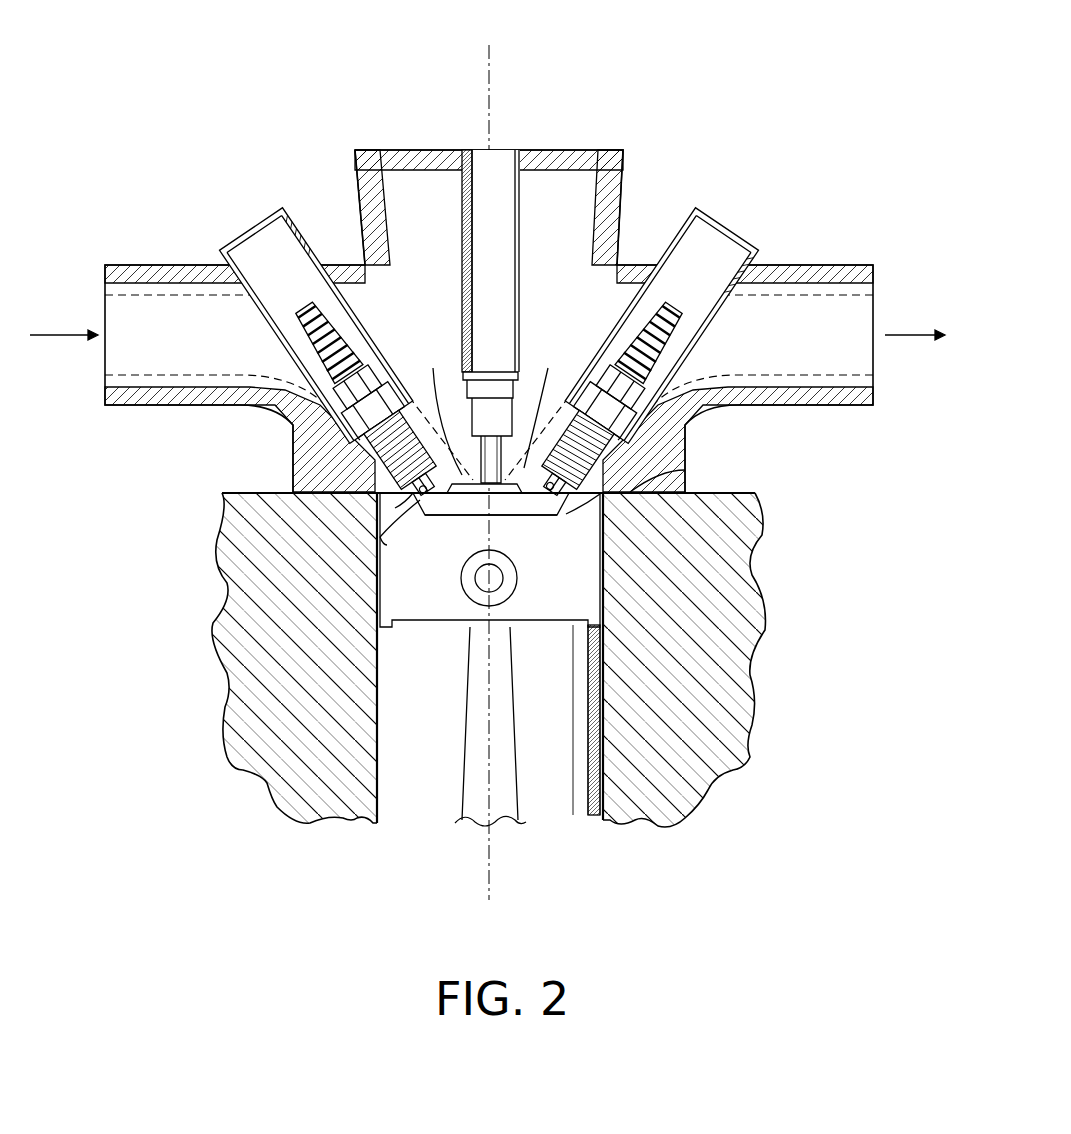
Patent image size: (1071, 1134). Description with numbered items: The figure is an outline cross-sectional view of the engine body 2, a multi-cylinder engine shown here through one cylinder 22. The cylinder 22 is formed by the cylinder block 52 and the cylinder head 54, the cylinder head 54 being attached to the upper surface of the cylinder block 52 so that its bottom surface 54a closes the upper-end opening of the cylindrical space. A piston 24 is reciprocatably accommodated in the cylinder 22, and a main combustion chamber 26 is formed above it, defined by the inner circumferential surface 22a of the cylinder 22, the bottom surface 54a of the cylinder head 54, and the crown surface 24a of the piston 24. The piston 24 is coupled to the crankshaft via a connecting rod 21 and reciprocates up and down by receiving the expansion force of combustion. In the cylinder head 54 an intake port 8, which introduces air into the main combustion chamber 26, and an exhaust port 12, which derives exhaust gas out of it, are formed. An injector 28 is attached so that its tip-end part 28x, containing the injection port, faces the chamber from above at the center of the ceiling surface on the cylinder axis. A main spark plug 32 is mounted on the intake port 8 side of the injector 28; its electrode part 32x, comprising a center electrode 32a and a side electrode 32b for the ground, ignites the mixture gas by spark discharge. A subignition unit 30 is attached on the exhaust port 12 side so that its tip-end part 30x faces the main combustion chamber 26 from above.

The engine body 2 is at (584, 107).
The intake port 8 is at (165, 300).
The exhaust port 12 is at (822, 300).
The connecting rod 21 is at (458, 823).
The cylinder 22 is at (432, 795).
The inner circumferential surface 22a is at (600, 823).
The piston 24 is at (563, 627).
The crown surface 24a is at (523, 506).
The main combustion chamber 26 is at (520, 500).
The injector 28 is at (466, 140).
The tip-end part 28x is at (436, 406).
The subignition unit 30 is at (688, 278).
The tip-end part 30x is at (685, 474).
The main spark plug 32 is at (290, 278).
The center electrode 32a is at (392, 508).
The side electrode 32b is at (387, 543).
The electrode part 32x is at (250, 530).
The cylinder block 52 is at (755, 646).
The cylinder head 54 is at (826, 405).
The bottom surface 54a is at (544, 403).